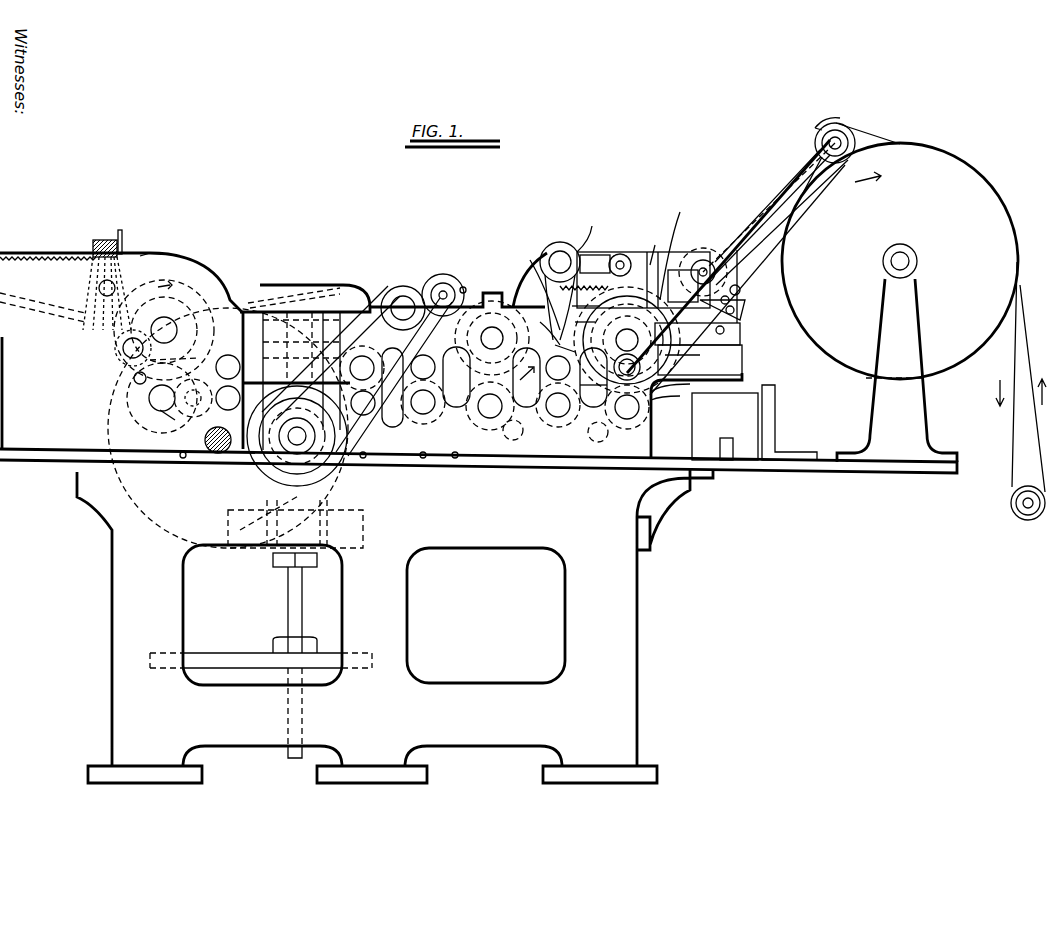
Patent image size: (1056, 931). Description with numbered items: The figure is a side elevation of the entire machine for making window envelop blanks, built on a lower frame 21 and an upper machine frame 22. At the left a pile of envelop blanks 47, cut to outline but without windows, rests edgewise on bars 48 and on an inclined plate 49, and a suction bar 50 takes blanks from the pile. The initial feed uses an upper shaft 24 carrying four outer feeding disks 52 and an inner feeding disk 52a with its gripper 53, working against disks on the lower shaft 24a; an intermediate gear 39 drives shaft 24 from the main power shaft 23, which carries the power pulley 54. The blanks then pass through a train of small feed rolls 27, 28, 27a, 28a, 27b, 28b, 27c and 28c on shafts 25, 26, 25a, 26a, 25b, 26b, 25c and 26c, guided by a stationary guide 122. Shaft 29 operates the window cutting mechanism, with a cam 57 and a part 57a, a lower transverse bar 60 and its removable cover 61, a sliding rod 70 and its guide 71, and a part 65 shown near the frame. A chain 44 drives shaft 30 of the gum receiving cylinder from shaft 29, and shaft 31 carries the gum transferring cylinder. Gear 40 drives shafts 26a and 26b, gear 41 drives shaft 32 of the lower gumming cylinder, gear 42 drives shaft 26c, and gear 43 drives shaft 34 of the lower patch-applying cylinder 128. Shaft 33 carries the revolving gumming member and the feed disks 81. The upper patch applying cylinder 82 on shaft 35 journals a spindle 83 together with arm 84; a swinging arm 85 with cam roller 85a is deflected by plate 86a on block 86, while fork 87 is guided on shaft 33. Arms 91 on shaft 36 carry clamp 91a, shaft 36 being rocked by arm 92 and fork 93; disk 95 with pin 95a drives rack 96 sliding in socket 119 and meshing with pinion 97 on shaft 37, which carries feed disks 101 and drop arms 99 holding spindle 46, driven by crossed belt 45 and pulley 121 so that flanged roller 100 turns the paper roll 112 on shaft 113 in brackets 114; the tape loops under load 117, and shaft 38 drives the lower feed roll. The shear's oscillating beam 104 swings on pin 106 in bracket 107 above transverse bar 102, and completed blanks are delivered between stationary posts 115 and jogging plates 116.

The lower frame 21 is at (395, 626).
The upper machine frame 22 is at (371, 355).
The main power shaft 23 is at (216, 452).
The upper shaft of the initial feeding mechanism 24 is at (166, 328).
The lower shaft of the initial feeding mechanism 24a is at (150, 397).
The feed roll shaft 25 is at (225, 358).
The feed roll shaft 25a is at (390, 292).
The feed roll shaft 25b is at (470, 277).
The feed roll shaft 25c is at (496, 323).
The feed roll shaft 26 is at (190, 416).
The feed roll shaft 26a is at (360, 428).
The feed roll shaft 26b is at (425, 420).
The feed roll shaft 26c is at (558, 420).
The feed roll 27 is at (230, 298).
The feed roll 27a is at (400, 290).
The feed roll 27b is at (438, 280).
The feed roll 27c is at (497, 309).
The feed roll 28 is at (180, 460).
The feed roll 28a is at (350, 465).
The feed roll 28b is at (420, 465).
The feed roll 28c is at (547, 422).
The window punching shaft 29 is at (270, 465).
The gum receiving cylinder shaft 30 is at (408, 290).
The gum transferring cylinder shaft 31 is at (448, 280).
The lower gumming cylinder shaft 32 is at (490, 422).
The gumming member shaft 33 is at (438, 335).
The lower patch applying cylinder shaft 34 is at (640, 410).
The upper patch applying cylinder shaft 35 is at (598, 338).
The clamp actuating shaft 36 is at (562, 250).
The transparent paper feed shaft 37 is at (703, 258).
The lower feed roll shaft 38 is at (742, 316).
The intermediate gear 39 is at (162, 412).
The intermediate gear 40 is at (415, 495).
The intermediate gear 41 is at (455, 465).
The intermediate gear 42 is at (518, 439).
The intermediate gear 43 is at (601, 441).
The chain 44 is at (280, 470).
The crossed belt 45 is at (765, 222).
The spindle 46 is at (848, 138).
The pile of envelop blanks 47 is at (95, 252).
The bars 48 is at (10, 300).
The inclined plate 49 is at (120, 257).
The suction bar 50 is at (140, 257).
The upper and outer feeding disks 52 is at (164, 330).
The inner feeding disk 52a is at (135, 378).
The gripper 53 is at (124, 350).
The power pulley 54 is at (228, 428).
The cam 57 is at (175, 360).
The arm 57a is at (553, 340).
The lower transverse bar 60 is at (295, 521).
The removable vertical cover 61 is at (273, 556).
The frame plate 65 is at (301, 381).
The sliding rod 70 is at (288, 605).
The guide 71 is at (208, 658).
The feed disks 81 is at (491, 377).
The upper patch applying cylinder 82 is at (670, 362).
The revolving and rocking spindle 83 is at (576, 304).
The arm 84 is at (575, 319).
The swinging arm 85 is at (579, 279).
The cam roller 85a is at (697, 346).
The block 86 is at (536, 286).
The plate 86a is at (588, 228).
The fork 87 is at (537, 324).
The arms 91 is at (625, 243).
The clamp 91a is at (626, 243).
The arm 92 is at (643, 280).
The fork 93 is at (674, 246).
The disk 95 is at (670, 387).
The pin 95a is at (670, 391).
The rack 96 is at (745, 275).
The pinion 97 is at (745, 262).
The drop arms 99 is at (768, 192).
The flanged roller 100 is at (840, 124).
The upper feed disks 101 is at (708, 258).
The transverse bar 102 is at (697, 297).
The oscillating beam 104 is at (655, 247).
The pin 106 is at (742, 292).
The bracket 107 is at (725, 332).
The roll of transparent paper 112 is at (900, 261).
The shaft 113 is at (905, 265).
The brackets 114 is at (897, 370).
The stationary posts 115 is at (775, 407).
The jogging plates 116 is at (725, 426).
The load 117 is at (1030, 520).
The flat socket 119 is at (746, 296).
The pulley 121 is at (859, 158).
The stationary guide 122 is at (498, 387).
The lower patch-applying cylinder 128 is at (648, 407).